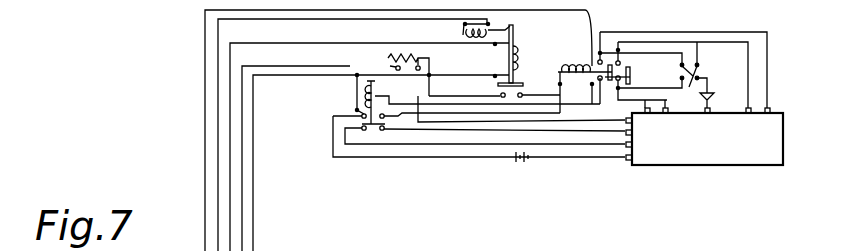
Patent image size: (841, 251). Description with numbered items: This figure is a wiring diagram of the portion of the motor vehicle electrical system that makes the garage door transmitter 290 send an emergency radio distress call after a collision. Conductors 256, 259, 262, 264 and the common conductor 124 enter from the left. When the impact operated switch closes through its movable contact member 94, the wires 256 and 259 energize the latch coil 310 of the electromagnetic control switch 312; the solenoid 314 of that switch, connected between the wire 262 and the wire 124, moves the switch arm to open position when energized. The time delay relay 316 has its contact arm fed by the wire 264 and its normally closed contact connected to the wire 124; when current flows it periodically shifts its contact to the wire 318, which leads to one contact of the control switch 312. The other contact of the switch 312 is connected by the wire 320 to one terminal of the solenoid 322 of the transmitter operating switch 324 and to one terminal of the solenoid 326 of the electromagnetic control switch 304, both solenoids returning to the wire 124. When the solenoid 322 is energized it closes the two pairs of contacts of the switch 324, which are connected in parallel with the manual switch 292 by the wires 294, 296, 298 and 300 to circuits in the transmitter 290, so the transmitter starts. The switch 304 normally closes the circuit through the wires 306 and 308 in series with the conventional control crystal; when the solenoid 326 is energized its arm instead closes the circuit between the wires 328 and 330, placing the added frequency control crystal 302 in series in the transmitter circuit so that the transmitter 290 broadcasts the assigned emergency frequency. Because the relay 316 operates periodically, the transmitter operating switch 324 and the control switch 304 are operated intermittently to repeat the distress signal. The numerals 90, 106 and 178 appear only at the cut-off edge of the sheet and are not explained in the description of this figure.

The conductor 256 is at (205, 42).
The wire 259 is at (218, 77).
The conductor 262 is at (230, 110).
The conductor 264 is at (242, 143).
The electric conductor 124 is at (253, 175).
The latch coil 310 is at (463, 35).
The solenoid 314 is at (508, 67).
The electromagnetic control switch 312 is at (500, 86).
The time delay relay 316 is at (392, 58).
The solenoid 326 is at (357, 93).
The electromagnetic control switch 304 is at (342, 114).
The wire 330 is at (344, 146).
The wire 308 is at (355, 160).
The wire 318 is at (418, 122).
The wire 320 is at (516, 106).
The frequency control crystal 302 is at (520, 164).
The solenoid 322 is at (588, 40).
The transmitter operating switch 324 is at (588, 66).
The wire 298 is at (612, 32).
The wire 294 is at (679, 33).
The wire 300 is at (643, 69).
The manual switch 292 is at (698, 65).
The wire 296 is at (698, 79).
The garage door transmitter 290 is at (647, 162).
The wire 328 is at (592, 180).
The wire 306 is at (600, 105).
The element 90 is at (748, 238).
The element 106 is at (711, 243).
The movable contact member 94 is at (782, 244).
The element 178 is at (318, 245).